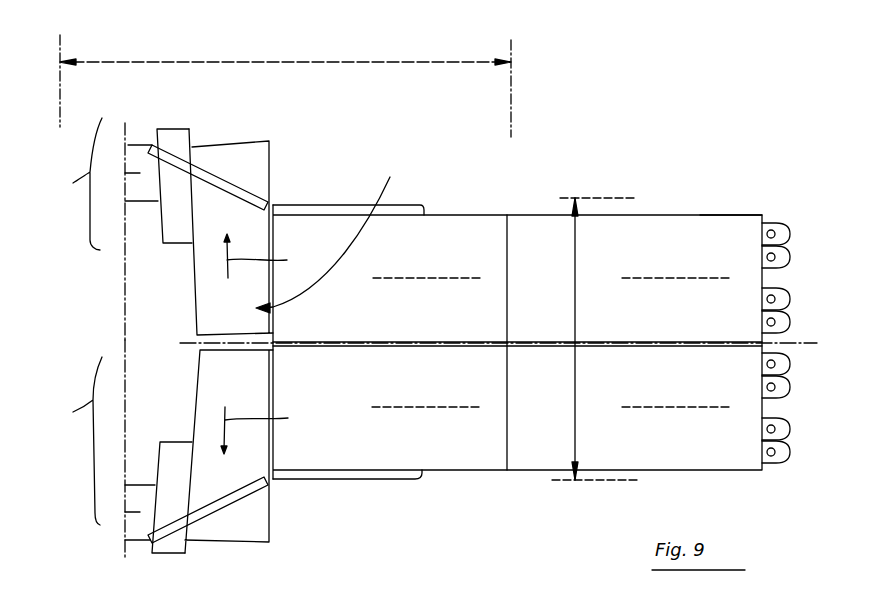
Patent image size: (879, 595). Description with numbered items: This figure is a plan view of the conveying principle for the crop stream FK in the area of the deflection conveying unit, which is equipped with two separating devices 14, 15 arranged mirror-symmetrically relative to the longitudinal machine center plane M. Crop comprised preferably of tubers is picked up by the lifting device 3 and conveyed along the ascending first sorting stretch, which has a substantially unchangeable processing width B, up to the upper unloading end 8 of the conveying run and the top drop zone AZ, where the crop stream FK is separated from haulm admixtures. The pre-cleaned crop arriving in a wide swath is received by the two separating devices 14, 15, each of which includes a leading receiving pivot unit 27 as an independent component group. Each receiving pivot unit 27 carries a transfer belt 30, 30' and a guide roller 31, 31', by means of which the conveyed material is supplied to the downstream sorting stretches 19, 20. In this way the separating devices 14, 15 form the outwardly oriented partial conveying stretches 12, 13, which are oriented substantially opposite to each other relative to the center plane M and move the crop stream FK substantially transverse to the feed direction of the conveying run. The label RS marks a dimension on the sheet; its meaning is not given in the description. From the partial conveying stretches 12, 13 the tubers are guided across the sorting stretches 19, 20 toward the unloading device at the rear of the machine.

The setting distance RS is at (353, 61).
The separating device 15 is at (140, 238).
The separating device 14 is at (130, 365).
The receiving pivot unit 27 is at (78, 321).
The sorting stretch 19 is at (129, 145).
The sorting stretch 20 is at (128, 537).
The transfer belt 30' is at (212, 234).
The transfer belt 30 is at (207, 451).
The guide roller 31' is at (208, 137).
The guide roller 31 is at (234, 514).
The upper unloading end 8 is at (274, 253).
The drop zone AZ is at (339, 228).
The partial conveying stretch 12 is at (272, 256).
The partial conveying stretch 13 is at (273, 430).
The crop stream FK is at (412, 278).
The processing width B is at (575, 305).
The lifting device 3 is at (766, 192).
The longitudinal machine center plane M is at (814, 345).